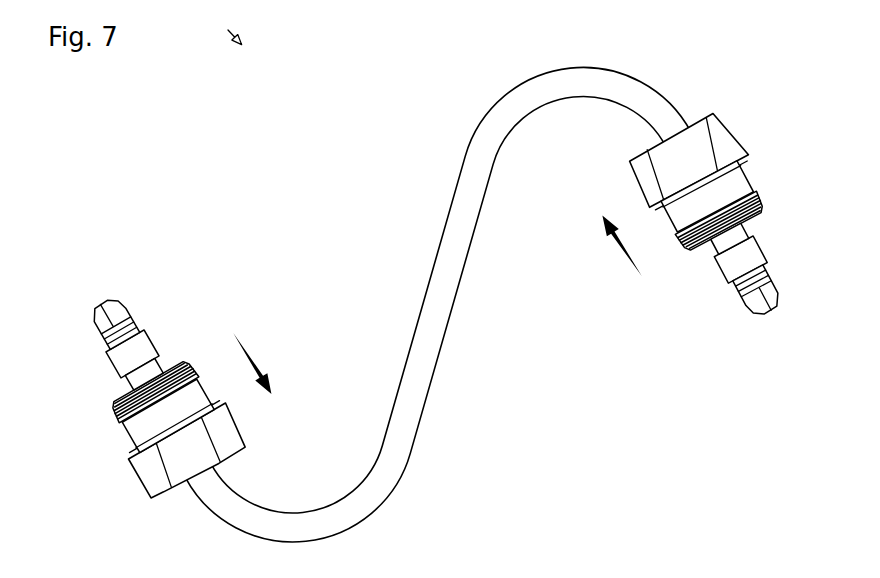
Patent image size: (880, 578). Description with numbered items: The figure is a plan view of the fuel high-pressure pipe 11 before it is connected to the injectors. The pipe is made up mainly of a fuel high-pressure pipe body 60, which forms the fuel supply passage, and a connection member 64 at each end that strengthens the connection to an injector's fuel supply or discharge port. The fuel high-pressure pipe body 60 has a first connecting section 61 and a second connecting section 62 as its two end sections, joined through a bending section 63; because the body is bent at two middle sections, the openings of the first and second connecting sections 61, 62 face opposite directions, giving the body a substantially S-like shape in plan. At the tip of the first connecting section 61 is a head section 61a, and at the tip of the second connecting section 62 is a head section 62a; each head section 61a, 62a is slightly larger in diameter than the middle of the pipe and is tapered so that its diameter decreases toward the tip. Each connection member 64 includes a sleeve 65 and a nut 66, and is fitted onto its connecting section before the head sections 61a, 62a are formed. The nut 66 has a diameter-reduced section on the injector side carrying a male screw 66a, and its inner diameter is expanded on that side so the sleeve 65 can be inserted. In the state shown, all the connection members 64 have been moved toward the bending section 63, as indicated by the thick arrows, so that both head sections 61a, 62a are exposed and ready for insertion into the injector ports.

The fuel high-pressure pipe 11 is at (227, 27).
The fuel high-pressure pipe body 60 is at (436, 313).
The first connecting section 61 is at (141, 370).
The head section 61a is at (117, 307).
The second connecting section 62 is at (716, 244).
The head section 62a is at (777, 280).
The bending section 63 is at (437, 312).
The connection member 64 is at (436, 305).
The sleeve 65 is at (121, 357).
The nut 66 is at (141, 432).
The male screw 66a is at (194, 375).